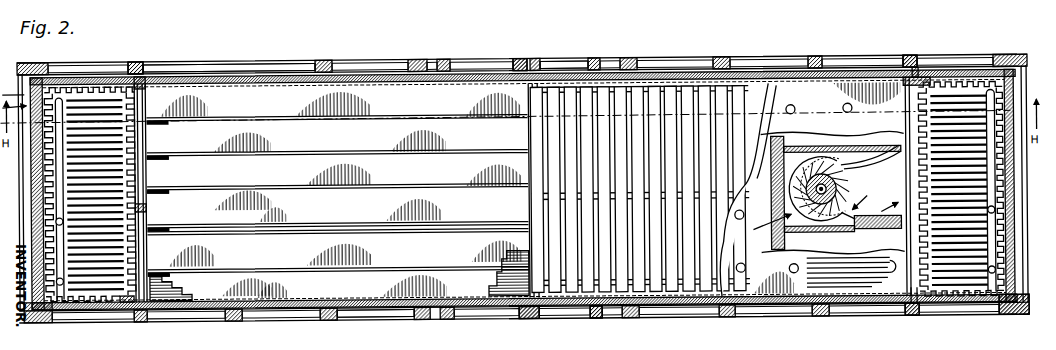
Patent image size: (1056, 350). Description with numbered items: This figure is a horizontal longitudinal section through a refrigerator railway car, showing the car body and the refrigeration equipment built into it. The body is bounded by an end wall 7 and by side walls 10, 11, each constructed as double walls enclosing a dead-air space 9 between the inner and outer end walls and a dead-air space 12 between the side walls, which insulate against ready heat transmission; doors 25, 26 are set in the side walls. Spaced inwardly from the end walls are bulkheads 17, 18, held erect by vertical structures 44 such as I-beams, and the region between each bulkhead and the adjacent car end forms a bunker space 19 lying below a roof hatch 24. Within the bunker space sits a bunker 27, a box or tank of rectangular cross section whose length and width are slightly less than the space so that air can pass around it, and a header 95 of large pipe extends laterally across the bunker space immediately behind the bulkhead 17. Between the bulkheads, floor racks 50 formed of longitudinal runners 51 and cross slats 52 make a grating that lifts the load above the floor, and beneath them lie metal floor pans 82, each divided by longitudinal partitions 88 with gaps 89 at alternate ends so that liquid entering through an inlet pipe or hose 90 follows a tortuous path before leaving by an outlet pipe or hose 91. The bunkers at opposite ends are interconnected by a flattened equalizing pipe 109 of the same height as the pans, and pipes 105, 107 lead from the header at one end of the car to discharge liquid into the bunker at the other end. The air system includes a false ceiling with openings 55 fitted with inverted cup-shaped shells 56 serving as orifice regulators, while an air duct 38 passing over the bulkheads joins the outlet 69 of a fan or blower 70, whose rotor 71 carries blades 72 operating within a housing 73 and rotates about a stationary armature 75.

The end wall 7 is at (1028, 184).
The dead-air space 9 is at (1020, 205).
The side wall 10 is at (393, 65).
The side wall 11 is at (410, 324).
The dead-air space 12 is at (306, 73).
The bulkhead 17 is at (920, 84).
The bulkhead 18 is at (152, 92).
The bunker space 19 is at (139, 77).
The hatch 24 is at (911, 300).
The door 25 is at (571, 76).
The door 26 is at (496, 75).
The bunker 27 is at (94, 100).
The air duct 38 is at (898, 225).
The vertical structure 44 is at (912, 128).
The floor rack 50 is at (706, 91).
The runner 51 is at (668, 91).
The slat 52 is at (754, 93).
The opening 55 is at (792, 113).
The shell 56 is at (843, 114).
The fan outlet 69 is at (875, 196).
The fan or blower 70 is at (762, 225).
The rotor 71 is at (831, 212).
The fan blade 72 is at (816, 207).
The fan housing 73 is at (792, 186).
The stationary armature 75 is at (845, 184).
The floor pan 82 is at (256, 135).
The partition 88 is at (507, 292).
The partition spacing 89 is at (521, 318).
The inlet pipe or hose 90 is at (154, 157).
The outlet pipe or hose 91 is at (150, 188).
The header 95 is at (146, 210).
The pipe 105 is at (882, 281).
The pipe 107 is at (891, 281).
The equalizing pipe 109 is at (326, 235).